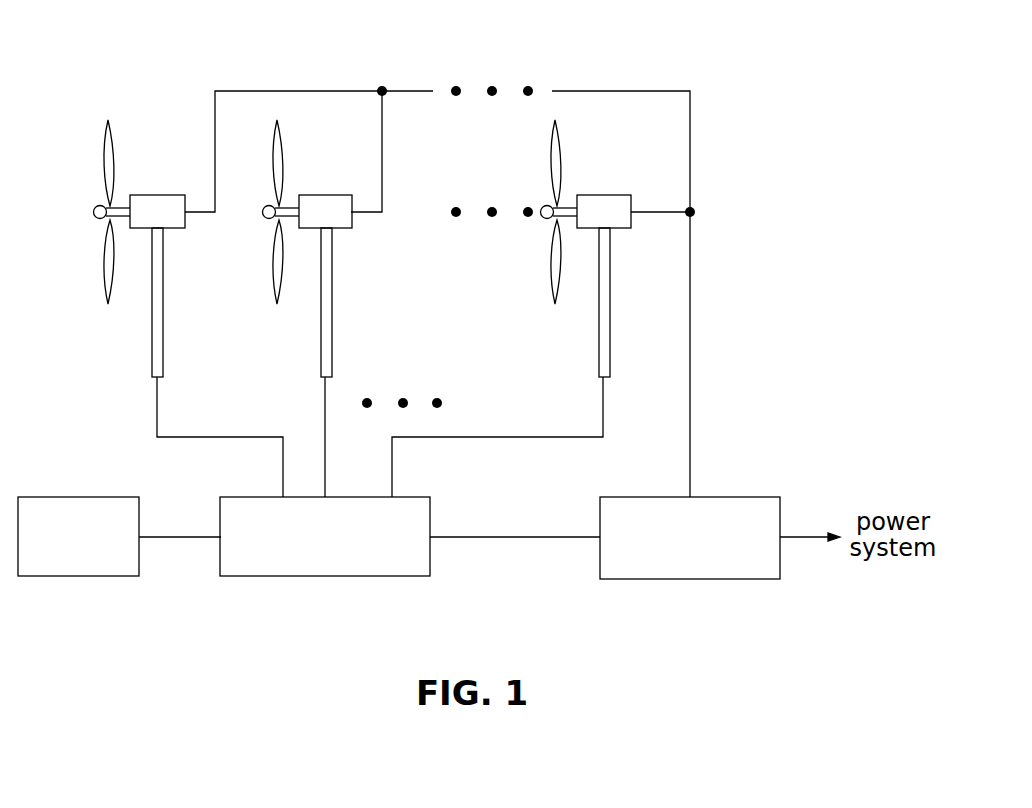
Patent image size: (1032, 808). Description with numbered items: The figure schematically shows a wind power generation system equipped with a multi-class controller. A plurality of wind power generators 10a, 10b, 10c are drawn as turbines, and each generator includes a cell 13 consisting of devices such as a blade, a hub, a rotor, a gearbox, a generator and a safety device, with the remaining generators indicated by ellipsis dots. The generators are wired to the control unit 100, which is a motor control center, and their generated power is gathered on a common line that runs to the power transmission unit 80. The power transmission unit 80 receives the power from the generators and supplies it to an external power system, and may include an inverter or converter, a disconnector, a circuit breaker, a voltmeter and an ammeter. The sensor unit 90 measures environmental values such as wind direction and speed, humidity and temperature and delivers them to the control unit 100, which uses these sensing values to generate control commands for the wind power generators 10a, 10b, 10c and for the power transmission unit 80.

The wind power generator 10a is at (153, 208).
The wind power generator 10b is at (315, 173).
The wind power generator 10c is at (612, 160).
The cell 13 is at (175, 197).
The sensor unit 90 is at (85, 577).
The control unit 100 is at (336, 577).
The power transmission unit 80 is at (696, 580).